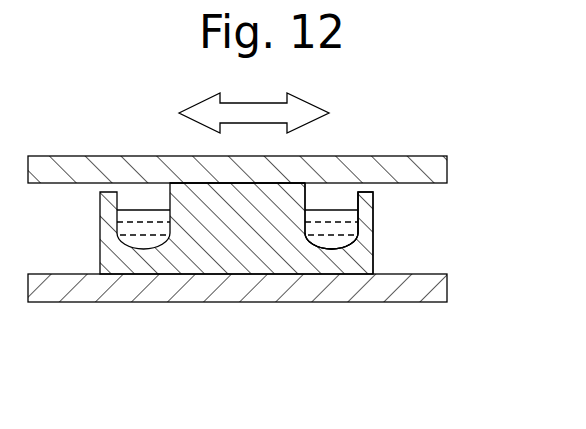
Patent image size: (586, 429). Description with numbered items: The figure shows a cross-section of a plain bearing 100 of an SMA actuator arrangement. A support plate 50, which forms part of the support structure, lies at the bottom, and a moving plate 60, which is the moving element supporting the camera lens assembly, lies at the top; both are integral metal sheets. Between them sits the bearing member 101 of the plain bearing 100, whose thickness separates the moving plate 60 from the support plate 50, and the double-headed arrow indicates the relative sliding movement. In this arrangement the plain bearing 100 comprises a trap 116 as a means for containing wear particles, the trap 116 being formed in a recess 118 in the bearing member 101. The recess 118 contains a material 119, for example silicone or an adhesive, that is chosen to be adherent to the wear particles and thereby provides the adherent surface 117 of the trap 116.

The moving plate 60 is at (50, 165).
The support plate 50 is at (55, 293).
The plain bearing 100 is at (227, 247).
The bearing member 101 is at (203, 213).
The trap 116 is at (368, 233).
The adherent surface 117 is at (336, 210).
The recess 118 is at (318, 246).
The material 119 is at (345, 230).